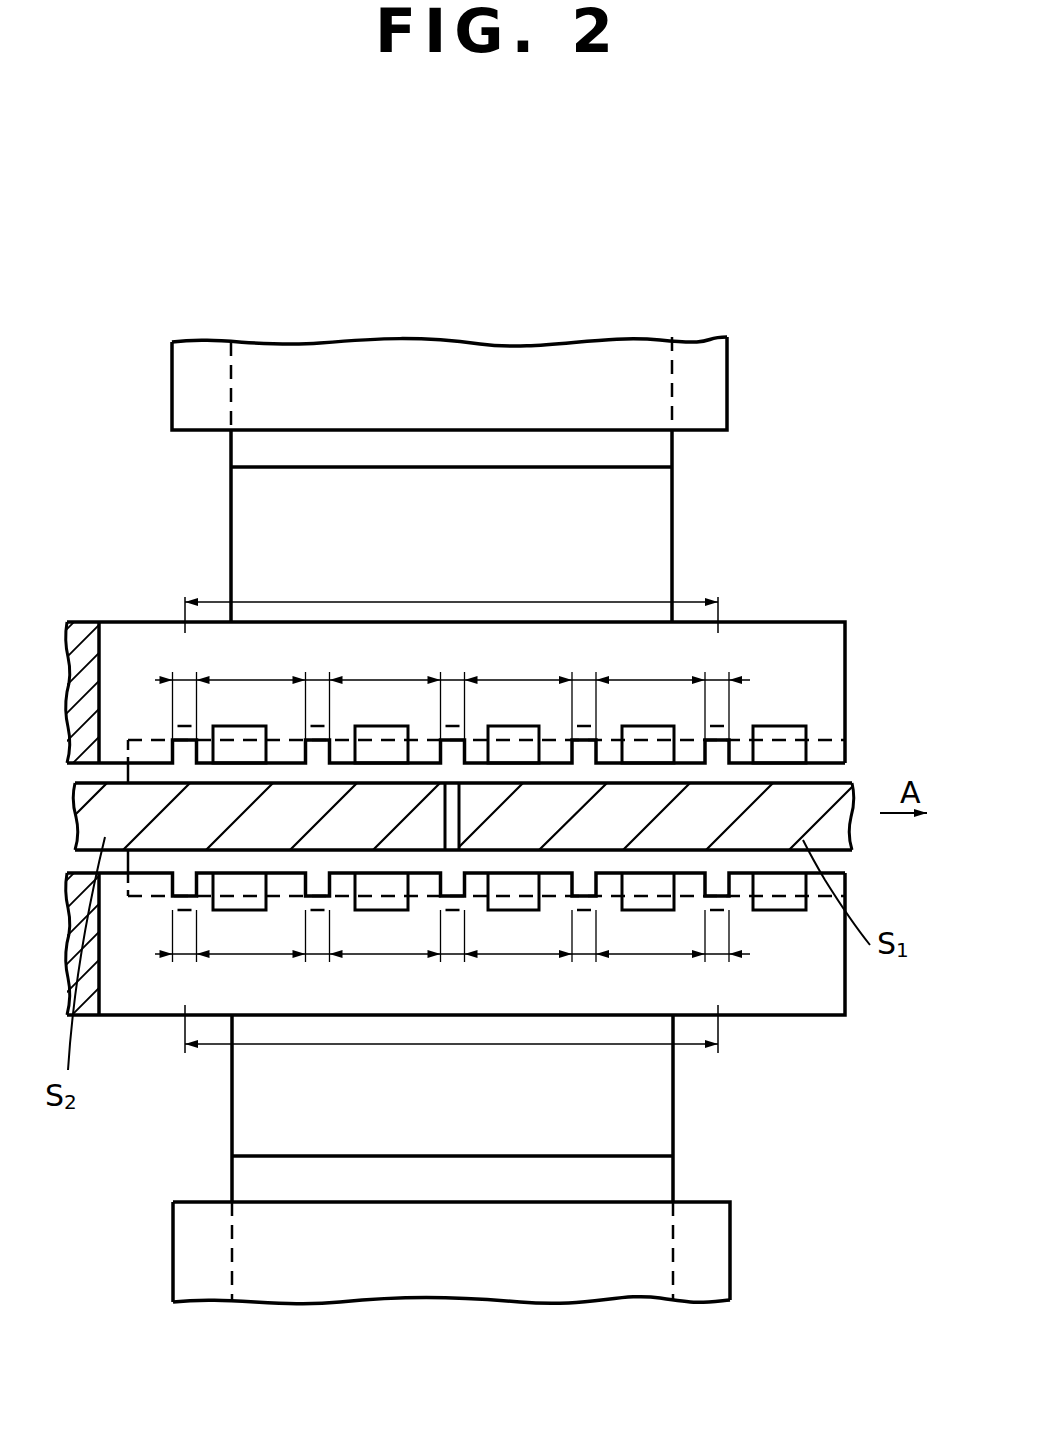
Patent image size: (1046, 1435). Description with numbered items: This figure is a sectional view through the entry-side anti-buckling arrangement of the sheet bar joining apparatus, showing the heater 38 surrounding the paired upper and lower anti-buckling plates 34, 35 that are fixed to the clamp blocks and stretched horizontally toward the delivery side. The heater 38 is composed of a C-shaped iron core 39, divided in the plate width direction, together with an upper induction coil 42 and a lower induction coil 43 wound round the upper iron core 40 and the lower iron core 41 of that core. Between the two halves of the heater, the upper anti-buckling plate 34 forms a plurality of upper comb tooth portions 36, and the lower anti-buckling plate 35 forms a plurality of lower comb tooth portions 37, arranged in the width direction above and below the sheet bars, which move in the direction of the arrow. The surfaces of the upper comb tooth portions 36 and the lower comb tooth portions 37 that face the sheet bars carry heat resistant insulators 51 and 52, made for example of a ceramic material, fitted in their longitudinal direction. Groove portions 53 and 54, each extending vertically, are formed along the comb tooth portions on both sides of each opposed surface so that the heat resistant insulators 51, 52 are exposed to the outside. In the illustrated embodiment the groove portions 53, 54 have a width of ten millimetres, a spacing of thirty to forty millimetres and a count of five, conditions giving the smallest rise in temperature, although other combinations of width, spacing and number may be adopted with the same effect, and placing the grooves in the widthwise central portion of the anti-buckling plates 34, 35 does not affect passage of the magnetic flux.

The upper anti-buckling plate 34 is at (317, 622).
The lower anti-buckling plate 35 is at (573, 1017).
The upper comb tooth portions 36 is at (620, 635).
The lower comb tooth portions 37 is at (777, 1005).
The heater 38 is at (578, 313).
The C-shaped iron core 39 is at (658, 498).
The upper iron core 40 is at (662, 453).
The lower iron core 41 is at (667, 1172).
The upper induction coil 42 is at (455, 355).
The lower induction coil 43 is at (717, 1245).
The heat resistant insulator 51 is at (835, 773).
The heat resistant insulator 52 is at (835, 862).
The groove portions 53 is at (187, 753).
The groove portions 54 is at (183, 878).